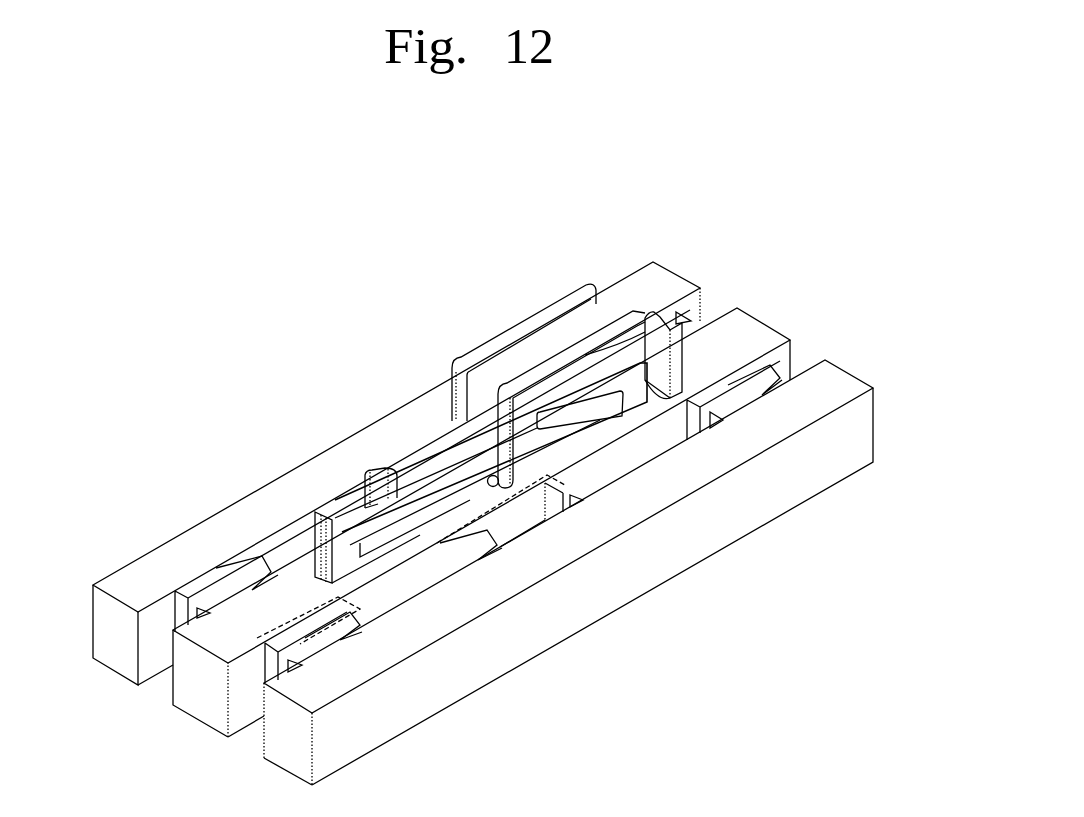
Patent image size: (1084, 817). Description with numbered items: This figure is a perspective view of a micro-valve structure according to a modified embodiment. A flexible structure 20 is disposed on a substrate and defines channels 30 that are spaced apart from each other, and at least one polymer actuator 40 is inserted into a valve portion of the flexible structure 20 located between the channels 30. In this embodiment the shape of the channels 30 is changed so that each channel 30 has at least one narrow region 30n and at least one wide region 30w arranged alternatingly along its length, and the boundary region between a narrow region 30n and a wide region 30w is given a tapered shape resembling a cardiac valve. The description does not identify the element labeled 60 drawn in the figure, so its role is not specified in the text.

The flexible structure 20 is at (862, 428).
The channel 30 is at (708, 308).
The narrow region 30n is at (345, 650).
The wide region 30w is at (540, 535).
The polymer actuator 40 is at (338, 558).
The clip 60 is at (660, 322).